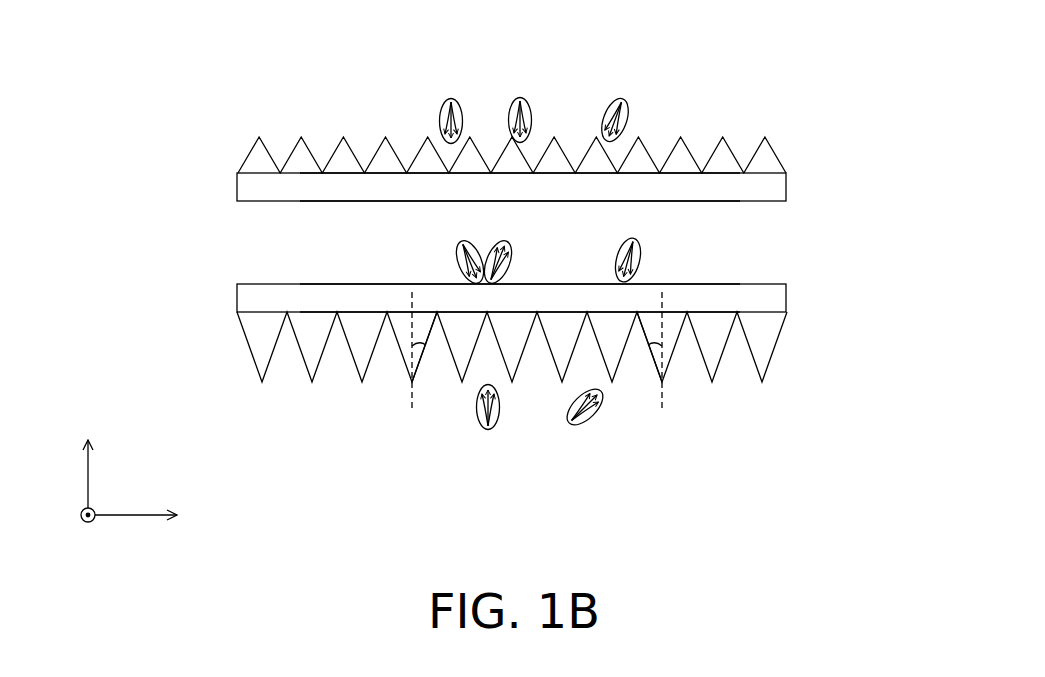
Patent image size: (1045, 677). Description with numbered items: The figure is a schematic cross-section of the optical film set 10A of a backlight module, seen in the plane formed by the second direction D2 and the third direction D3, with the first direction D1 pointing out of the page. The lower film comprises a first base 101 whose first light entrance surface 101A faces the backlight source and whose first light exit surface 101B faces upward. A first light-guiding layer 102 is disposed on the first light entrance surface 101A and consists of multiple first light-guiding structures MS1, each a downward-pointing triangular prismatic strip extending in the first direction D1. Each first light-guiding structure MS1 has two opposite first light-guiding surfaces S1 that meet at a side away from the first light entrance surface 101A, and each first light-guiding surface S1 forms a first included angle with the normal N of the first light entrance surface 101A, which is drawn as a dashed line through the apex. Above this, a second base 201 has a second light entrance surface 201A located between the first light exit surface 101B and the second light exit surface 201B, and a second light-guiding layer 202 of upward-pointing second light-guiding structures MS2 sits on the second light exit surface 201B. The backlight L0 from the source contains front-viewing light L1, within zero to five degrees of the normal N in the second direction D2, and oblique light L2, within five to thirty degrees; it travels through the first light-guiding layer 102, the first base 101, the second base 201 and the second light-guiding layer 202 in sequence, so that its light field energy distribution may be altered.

The optical film set 10A is at (845, 437).
The first base 101 is at (247, 298).
The first light entrance surface 101A is at (745, 310).
The first light exit surface 101B is at (745, 282).
The first light-guiding layer 102 is at (255, 337).
The first light-guiding structures MS1 is at (766, 340).
The second base 201 is at (247, 188).
The second light entrance surface 201A is at (744, 203).
The second light exit surface 201B is at (744, 175).
The second light-guiding layer 202 is at (252, 160).
The second light-guiding structures MS2 is at (766, 160).
The backlight L0 is at (496, 428).
The front-viewing light L1 is at (446, 102).
The oblique light L2 is at (629, 102).
The normal N is at (407, 391).
The first light-guiding surfaces S1 is at (421, 364).
The first direction D1 is at (78, 529).
The second direction D2 is at (156, 515).
The third direction D3 is at (88, 458).